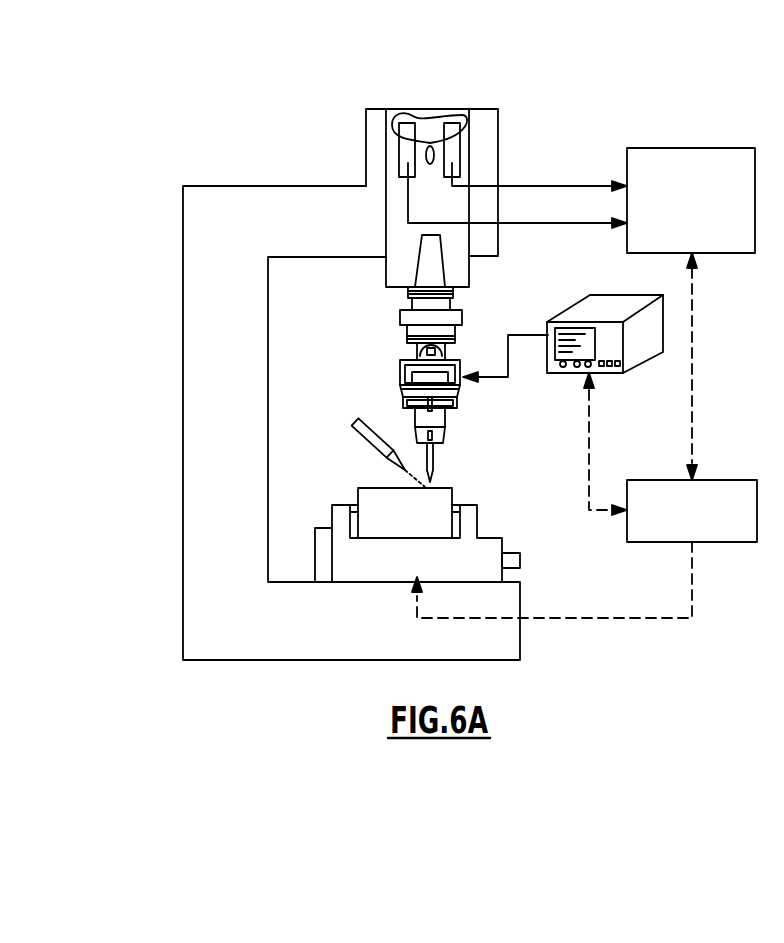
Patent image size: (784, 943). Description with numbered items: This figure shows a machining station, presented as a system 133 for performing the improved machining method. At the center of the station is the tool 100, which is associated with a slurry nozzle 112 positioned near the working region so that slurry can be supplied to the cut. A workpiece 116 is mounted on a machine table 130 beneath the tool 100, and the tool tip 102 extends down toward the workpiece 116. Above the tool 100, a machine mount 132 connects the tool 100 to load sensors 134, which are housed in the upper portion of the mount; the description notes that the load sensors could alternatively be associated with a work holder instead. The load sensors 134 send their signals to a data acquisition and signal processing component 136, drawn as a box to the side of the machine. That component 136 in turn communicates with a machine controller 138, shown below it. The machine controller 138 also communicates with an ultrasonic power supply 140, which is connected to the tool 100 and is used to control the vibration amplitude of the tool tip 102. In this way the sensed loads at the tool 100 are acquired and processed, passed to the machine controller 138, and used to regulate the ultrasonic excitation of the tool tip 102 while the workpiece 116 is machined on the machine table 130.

The tool 100 is at (408, 337).
The tool tip 102 is at (435, 460).
The slurry nozzle 112 is at (360, 443).
The workpiece 116 is at (373, 493).
The machine table 130 is at (370, 568).
The machine mount 132 is at (402, 239).
The system 133 is at (197, 128).
The load sensors 134 is at (407, 128).
The data acquisition and signal processing component 136 is at (660, 148).
The machine controller 138 is at (717, 480).
The ultrasonic power supply 140 is at (617, 367).